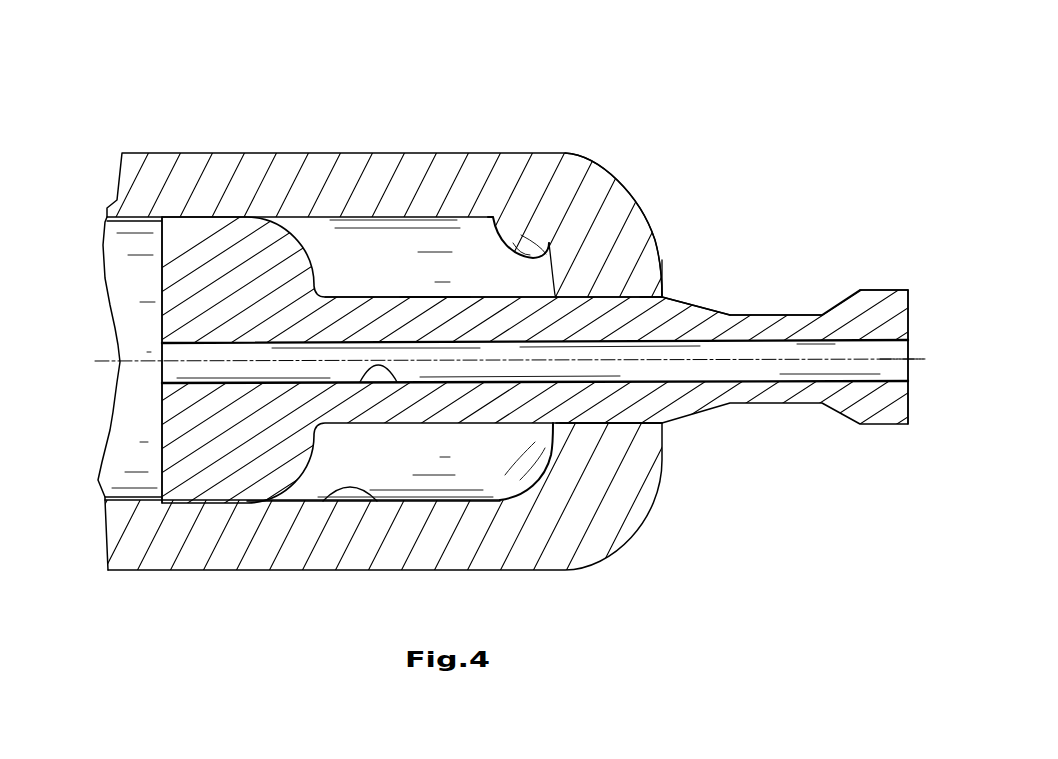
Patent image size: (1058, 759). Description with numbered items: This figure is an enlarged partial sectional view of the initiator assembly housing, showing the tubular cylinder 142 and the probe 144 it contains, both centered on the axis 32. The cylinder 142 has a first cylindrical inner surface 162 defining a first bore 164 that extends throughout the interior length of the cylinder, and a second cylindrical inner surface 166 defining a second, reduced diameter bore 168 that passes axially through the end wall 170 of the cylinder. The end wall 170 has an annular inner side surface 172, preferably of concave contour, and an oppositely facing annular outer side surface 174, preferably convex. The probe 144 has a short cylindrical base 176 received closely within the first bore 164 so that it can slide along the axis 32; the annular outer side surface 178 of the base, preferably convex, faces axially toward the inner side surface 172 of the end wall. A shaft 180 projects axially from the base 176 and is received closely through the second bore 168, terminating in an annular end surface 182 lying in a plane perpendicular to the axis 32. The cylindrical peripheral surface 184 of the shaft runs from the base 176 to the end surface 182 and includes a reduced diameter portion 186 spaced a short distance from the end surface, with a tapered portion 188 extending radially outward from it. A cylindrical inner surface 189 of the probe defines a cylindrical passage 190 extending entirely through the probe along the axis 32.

The cylinder 142 is at (180, 148).
The probe 144 is at (158, 281).
The base 176 is at (197, 322).
The cylindrical passage 190 is at (170, 373).
The outer side surface 178 is at (322, 232).
The shaft 180 is at (405, 295).
The peripheral surface 184 is at (438, 295).
The inner side surface 172 is at (495, 217).
The end wall 170 is at (603, 268).
The outer side surface 174 is at (661, 280).
The tapered portion 188 is at (687, 302).
The reduced diameter portion 186 is at (800, 313).
The end surface 182 is at (912, 313).
The axis 32 is at (925, 358).
The cylindrical inner surface 189 is at (360, 382).
The first cylindrical inner surface 162 is at (325, 503).
The first bore 164 is at (405, 514).
The second bore 168 is at (522, 432).
The second cylindrical inner surface 166 is at (592, 422).